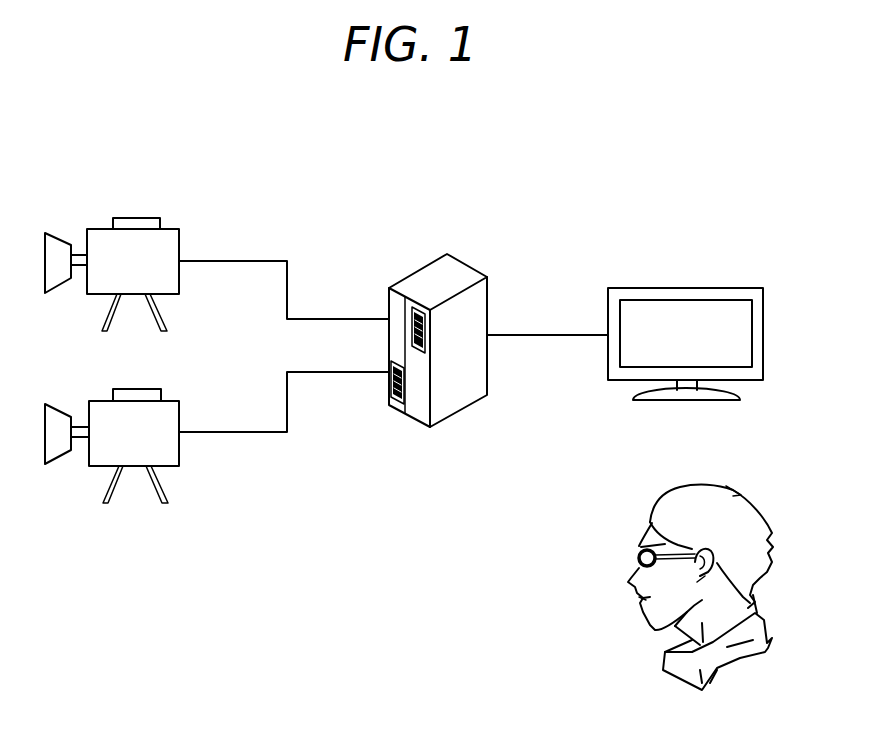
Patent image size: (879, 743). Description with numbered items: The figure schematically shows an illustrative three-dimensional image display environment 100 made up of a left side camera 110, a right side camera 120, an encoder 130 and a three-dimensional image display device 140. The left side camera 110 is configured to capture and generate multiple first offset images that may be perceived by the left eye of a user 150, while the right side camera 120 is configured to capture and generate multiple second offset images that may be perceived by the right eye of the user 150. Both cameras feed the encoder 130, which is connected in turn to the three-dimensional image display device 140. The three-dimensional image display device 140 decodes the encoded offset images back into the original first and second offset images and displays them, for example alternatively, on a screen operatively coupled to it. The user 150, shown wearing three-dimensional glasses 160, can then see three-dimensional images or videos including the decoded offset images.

The 3D image display environment 100 is at (434, 128).
The left side camera 110 is at (137, 389).
The right side camera 120 is at (137, 218).
The encoder 130 is at (467, 263).
The 3D image display device 140 is at (720, 288).
The user 150 is at (663, 657).
The 3D glasses 160 is at (640, 557).